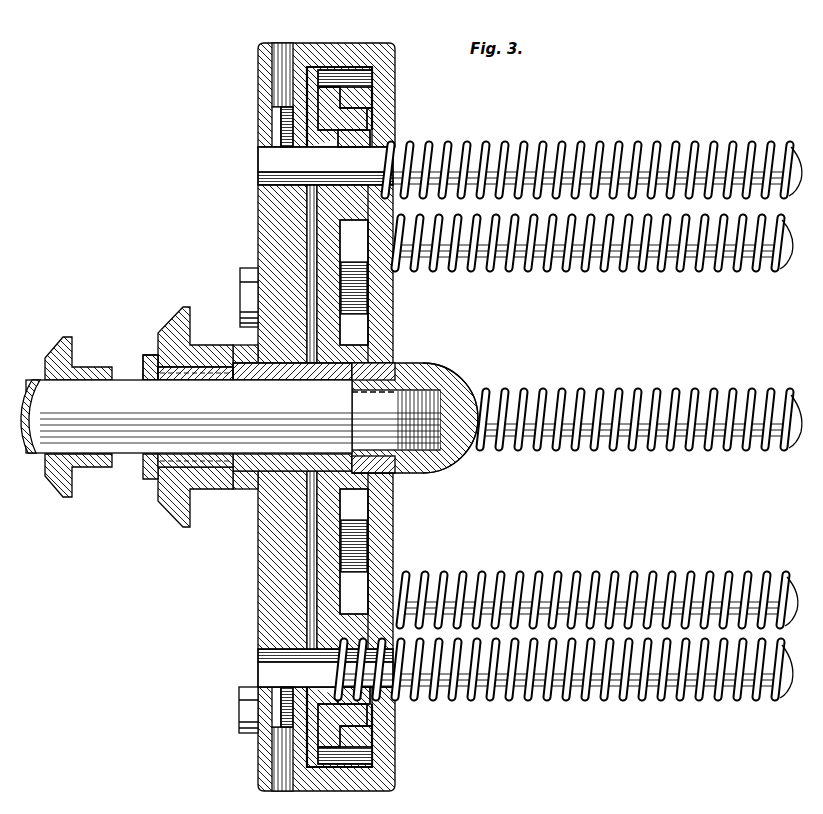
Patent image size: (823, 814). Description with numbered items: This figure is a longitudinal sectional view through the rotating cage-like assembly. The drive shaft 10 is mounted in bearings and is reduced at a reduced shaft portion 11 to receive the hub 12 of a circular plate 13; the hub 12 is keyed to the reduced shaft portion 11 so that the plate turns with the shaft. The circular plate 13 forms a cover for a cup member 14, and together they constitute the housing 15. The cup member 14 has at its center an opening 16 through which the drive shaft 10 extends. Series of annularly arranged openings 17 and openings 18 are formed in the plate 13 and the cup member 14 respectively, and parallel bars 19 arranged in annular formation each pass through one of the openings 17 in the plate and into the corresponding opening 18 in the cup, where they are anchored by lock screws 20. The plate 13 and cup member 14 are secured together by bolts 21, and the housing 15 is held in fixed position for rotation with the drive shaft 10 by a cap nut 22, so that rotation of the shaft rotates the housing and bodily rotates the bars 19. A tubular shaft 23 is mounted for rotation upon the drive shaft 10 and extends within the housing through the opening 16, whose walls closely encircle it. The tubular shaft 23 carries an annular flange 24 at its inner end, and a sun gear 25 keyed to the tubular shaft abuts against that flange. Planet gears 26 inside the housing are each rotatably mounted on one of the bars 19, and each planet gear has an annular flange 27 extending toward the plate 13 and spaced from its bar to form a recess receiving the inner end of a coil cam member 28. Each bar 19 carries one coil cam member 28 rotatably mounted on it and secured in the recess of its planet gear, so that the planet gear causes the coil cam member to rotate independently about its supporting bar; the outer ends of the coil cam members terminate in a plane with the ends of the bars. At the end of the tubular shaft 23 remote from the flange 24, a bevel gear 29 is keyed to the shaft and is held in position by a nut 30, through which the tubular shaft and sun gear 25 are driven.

The drive shaft 10 is at (28, 455).
The reduced shaft portion 11 is at (431, 421).
The hub 12 is at (398, 363).
The circular plate 13 is at (396, 552).
The cup member 14 is at (257, 578).
The housing 15 is at (322, 43).
The opening 16 is at (285, 378).
The openings 17 is at (388, 120).
The openings 18 is at (273, 192).
The parallel bars 19 is at (570, 422).
The lock screws 20 is at (283, 126).
The bolts 21 is at (240, 277).
The cap nut 22 is at (470, 385).
The tubular shaft 23 is at (221, 380).
The annular flange 24 is at (352, 487).
The sun gear 25 is at (328, 332).
The planet gears 26 is at (323, 92).
The annular flange 27 is at (382, 92).
The coil cam members 28 is at (481, 140).
The bevel gear 29 is at (170, 325).
The nut 30 is at (148, 357).